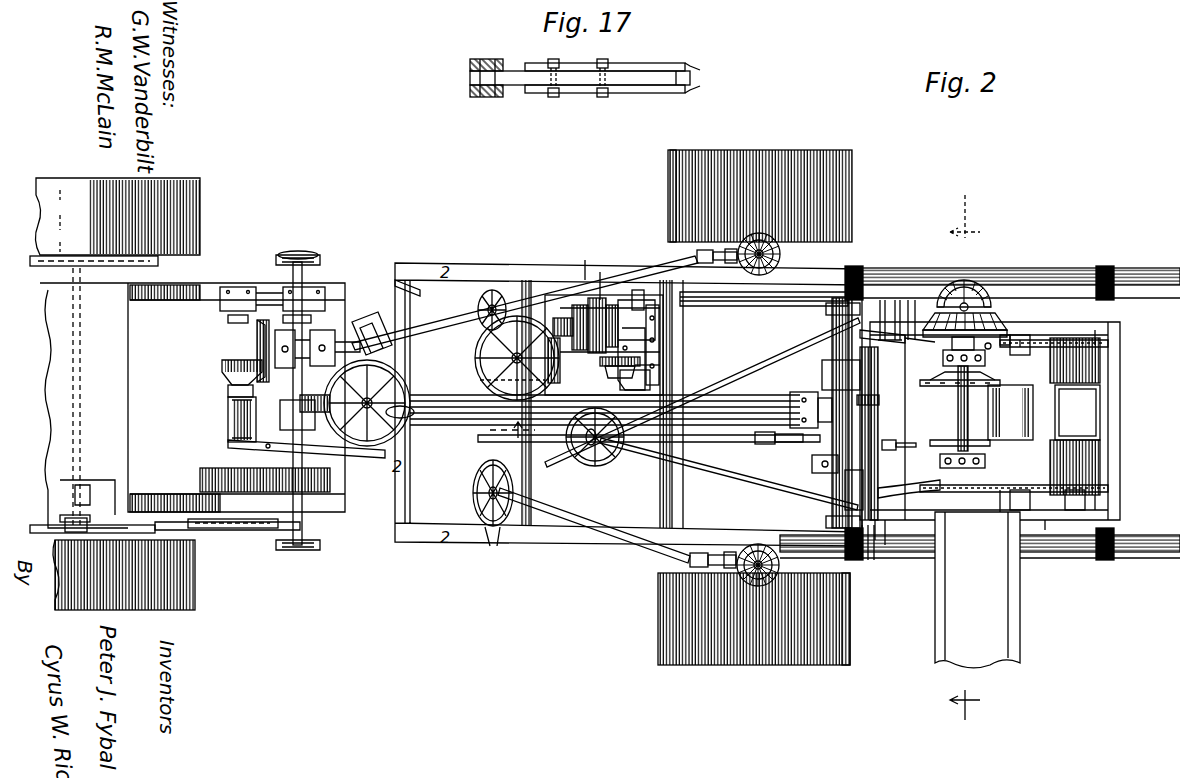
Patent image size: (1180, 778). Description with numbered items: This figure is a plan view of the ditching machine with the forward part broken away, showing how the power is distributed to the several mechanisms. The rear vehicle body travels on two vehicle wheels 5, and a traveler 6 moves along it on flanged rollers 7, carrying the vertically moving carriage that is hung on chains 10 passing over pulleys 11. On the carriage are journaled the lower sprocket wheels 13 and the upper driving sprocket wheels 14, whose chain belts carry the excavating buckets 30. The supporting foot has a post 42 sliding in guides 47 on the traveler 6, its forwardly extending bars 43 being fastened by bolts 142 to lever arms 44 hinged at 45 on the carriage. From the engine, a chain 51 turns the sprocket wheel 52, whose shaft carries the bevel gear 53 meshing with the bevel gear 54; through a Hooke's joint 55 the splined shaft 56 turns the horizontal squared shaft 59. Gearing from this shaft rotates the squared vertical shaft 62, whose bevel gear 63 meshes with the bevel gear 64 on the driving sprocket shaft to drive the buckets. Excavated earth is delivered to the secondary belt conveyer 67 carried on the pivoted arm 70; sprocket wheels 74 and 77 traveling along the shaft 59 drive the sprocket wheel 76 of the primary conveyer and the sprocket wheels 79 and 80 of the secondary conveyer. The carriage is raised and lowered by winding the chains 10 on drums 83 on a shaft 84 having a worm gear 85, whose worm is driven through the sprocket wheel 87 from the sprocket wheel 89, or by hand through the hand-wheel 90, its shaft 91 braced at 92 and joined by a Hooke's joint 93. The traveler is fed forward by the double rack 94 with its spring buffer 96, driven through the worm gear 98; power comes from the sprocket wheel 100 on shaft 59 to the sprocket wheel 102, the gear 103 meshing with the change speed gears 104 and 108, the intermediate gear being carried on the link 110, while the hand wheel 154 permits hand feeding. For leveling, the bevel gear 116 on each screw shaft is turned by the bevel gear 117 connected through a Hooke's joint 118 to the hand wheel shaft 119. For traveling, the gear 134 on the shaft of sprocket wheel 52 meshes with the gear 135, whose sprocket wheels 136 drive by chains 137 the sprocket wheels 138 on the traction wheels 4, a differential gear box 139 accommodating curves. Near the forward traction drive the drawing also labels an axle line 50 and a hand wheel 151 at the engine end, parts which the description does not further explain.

In FIG. 2, the traction wheels 4 is at (965, 458).
In FIG. 2, the vehicle wheels 5 is at (800, 170).
In FIG. 2, the traveler 6 is at (1078, 322).
In FIG. 2, the flanged rollers 7 is at (848, 288).
In FIG. 2, the chains 10 is at (822, 378).
In FIG. 2, the pulleys 11 is at (880, 360).
In FIG. 2, the sprocket wheels 13 is at (497, 428).
In FIG. 2, the driving sprocket wheels 14 is at (945, 386).
In FIG. 2, the excavating buckets 30 is at (1010, 412).
In FIG. 2, the post 42 is at (1077, 412).
In FIG. 17, the forwardly extending bars 43 is at (690, 79).
In FIG. 2, the forwardly extending bars 43 is at (1030, 340).
In FIG. 17, the lever arms 44 is at (511, 90).
In FIG. 2, the lever arms 44 is at (990, 352).
In FIG. 17, the hinge 45 is at (485, 59).
In FIG. 2, the hinge 45 is at (985, 362).
In FIG. 2, the guides 47 is at (1070, 322).
In FIG. 2, the axle 50 is at (75, 520).
In FIG. 2, the chain 51 is at (140, 520).
In FIG. 2, the sprocket wheel 52 is at (210, 532).
In FIG. 2, the bevel gear 53 is at (222, 372).
In FIG. 2, the bevel gear 54 is at (270, 320).
In FIG. 2, the Hooke's joint 55 is at (385, 300).
In FIG. 2, the shaft 56 is at (440, 330).
In FIG. 2, the horizontal squared shaft 59 is at (764, 310).
In FIG. 2, the squared vertical shaft 62 is at (966, 280).
In FIG. 2, the bevel gear 63 is at (950, 305).
In FIG. 2, the bevel gear 64 is at (1003, 330).
In FIG. 2, the secondary belt conveyer 67 is at (977, 590).
In FIG. 2, the arm 70 is at (940, 640).
In FIG. 2, the sprocket wheel 74 is at (910, 300).
In FIG. 2, the sprocket wheel 76 is at (915, 340).
In FIG. 2, the sprocket wheel 77 is at (878, 300).
In FIG. 2, the sprocket wheel 79 is at (885, 545).
In FIG. 2, the sprocket wheel 80 is at (1060, 500).
In FIG. 2, the drums 83 is at (832, 320).
In FIG. 2, the shaft 84 is at (878, 380).
In FIG. 2, the worm gear 85 is at (845, 500).
In FIG. 2, the sprocket wheel 87 is at (885, 450).
In FIG. 2, the sprocket wheel 89 is at (870, 540).
In FIG. 2, the hand-wheel 90 is at (594, 467).
In FIG. 2, the shaft 91 is at (740, 442).
In FIG. 2, the brace 92 is at (805, 355).
In FIG. 2, the Hooke's joint 93 is at (820, 475).
In FIG. 2, the rack 94 is at (565, 405).
In FIG. 2, the spring buffer 96 is at (878, 395).
In FIG. 2, the driving worm gear 98 is at (650, 375).
In FIG. 2, the sprocket wheel 100 is at (660, 312).
In FIG. 2, the sprocket wheel 102 is at (660, 358).
In FIG. 2, the gear 103 is at (608, 290).
In FIG. 2, the change speed gears 104 is at (620, 290).
In FIG. 2, the graduated change speed gears 108 is at (592, 300).
In FIG. 2, the link 110 is at (600, 372).
In FIG. 2, the bevel gear 116 is at (770, 245).
In FIG. 2, the bevel gear 117 is at (735, 250).
In FIG. 2, the Hooke's joint 118 is at (685, 258).
In FIG. 2, the hand wheel shaft 119 is at (552, 310).
In FIG. 2, the gear 134 is at (228, 447).
In FIG. 2, the gear 135 is at (332, 480).
In FIG. 2, the sprocket wheels 136 is at (320, 255).
In FIG. 2, the chains 137 is at (300, 262).
In FIG. 2, the sprocket wheels 138 is at (180, 272).
In FIG. 2, the differential gear box 139 is at (280, 412).
In FIG. 17, the bolts 142 is at (553, 100).
In FIG. 2, the bolts 142 is at (1018, 340).
In FIG. 2, the hand wheel 151 is at (378, 426).
In FIG. 2, the hand wheel 154 is at (480, 388).